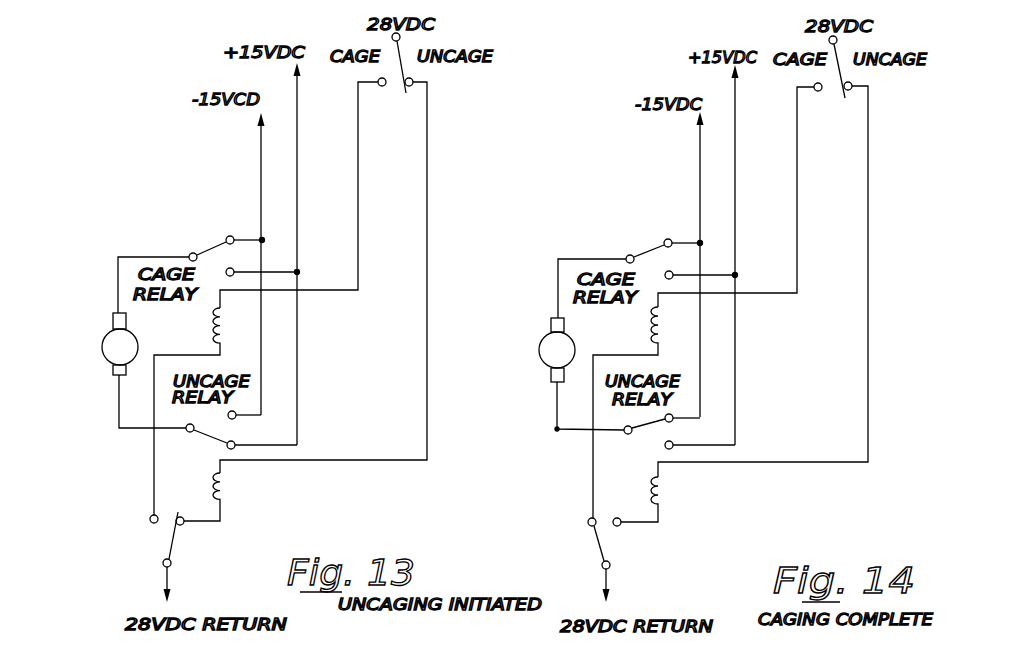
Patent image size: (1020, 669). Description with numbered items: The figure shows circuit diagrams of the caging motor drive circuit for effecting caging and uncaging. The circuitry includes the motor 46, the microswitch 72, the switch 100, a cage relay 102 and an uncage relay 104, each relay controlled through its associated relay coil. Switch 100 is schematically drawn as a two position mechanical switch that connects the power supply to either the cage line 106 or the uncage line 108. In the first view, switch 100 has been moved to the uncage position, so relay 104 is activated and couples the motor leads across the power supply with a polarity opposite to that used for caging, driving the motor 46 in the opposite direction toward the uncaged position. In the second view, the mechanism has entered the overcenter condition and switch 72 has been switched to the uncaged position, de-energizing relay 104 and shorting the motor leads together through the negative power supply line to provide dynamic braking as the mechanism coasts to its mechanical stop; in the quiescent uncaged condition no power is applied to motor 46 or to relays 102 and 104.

In FIG. 13, the motor 46 is at (100, 343).
In FIG. 14, the motor 46 is at (540, 343).
In FIG. 13, the microswitch 72 is at (170, 537).
In FIG. 14, the microswitch 72 is at (600, 545).
In FIG. 13, the switch 100 is at (412, 48).
In FIG. 14, the switch 100 is at (850, 50).
In FIG. 13, the cage relay 102 is at (200, 247).
In FIG. 14, the cage relay 102 is at (652, 253).
In FIG. 13, the uncage relay 104 is at (200, 435).
In FIG. 14, the uncage relay 104 is at (643, 433).
In FIG. 13, the cage line 106 is at (360, 195).
In FIG. 14, the cage line 106 is at (798, 192).
In FIG. 13, the uncage line 108 is at (428, 226).
In FIG. 14, the uncage line 108 is at (869, 238).